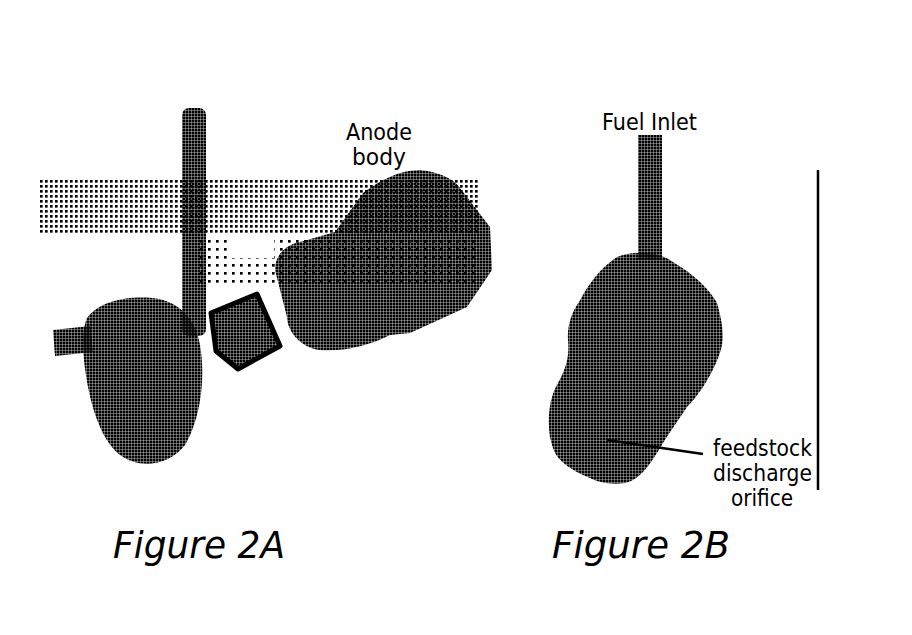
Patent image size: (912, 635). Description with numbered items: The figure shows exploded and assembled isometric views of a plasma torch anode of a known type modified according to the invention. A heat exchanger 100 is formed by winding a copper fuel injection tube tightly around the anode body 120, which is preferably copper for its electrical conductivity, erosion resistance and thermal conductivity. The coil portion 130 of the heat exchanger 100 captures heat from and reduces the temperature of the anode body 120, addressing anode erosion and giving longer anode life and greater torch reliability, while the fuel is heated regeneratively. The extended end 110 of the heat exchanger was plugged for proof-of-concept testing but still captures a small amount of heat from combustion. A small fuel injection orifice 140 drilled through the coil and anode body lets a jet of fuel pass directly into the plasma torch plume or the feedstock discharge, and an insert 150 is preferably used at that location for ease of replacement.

In FIG. 2A, the heat exchanger 100 is at (262, 279).
In FIG. 2A, the extended end 110 is at (192, 110).
In FIG. 2A, the anode body 120 is at (308, 248).
In FIG. 2A, the coil portion 130 is at (82, 340).
In FIG. 2B, the fuel injection orifice 140 is at (575, 403).
In FIG. 2A, the insert 150 is at (260, 364).